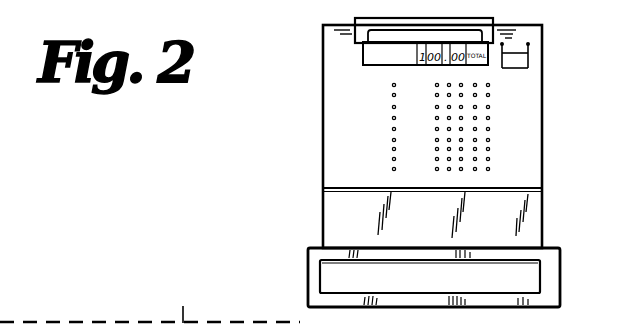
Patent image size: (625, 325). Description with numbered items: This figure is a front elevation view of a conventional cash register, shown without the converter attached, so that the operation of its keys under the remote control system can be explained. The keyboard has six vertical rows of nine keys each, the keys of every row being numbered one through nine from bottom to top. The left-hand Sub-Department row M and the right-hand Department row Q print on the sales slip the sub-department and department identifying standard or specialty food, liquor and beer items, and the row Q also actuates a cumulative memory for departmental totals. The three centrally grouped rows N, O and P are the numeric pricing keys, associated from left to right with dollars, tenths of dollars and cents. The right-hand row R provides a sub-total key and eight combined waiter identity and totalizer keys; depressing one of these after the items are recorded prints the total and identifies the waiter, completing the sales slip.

The sub-department row M is at (390, 133).
The dollars pricing row N is at (436, 135).
The tenths-of-dollars pricing row O is at (449, 135).
The cents pricing row P is at (462, 135).
The department row Q is at (475, 135).
The waiter identity and totalizer row R is at (488, 135).